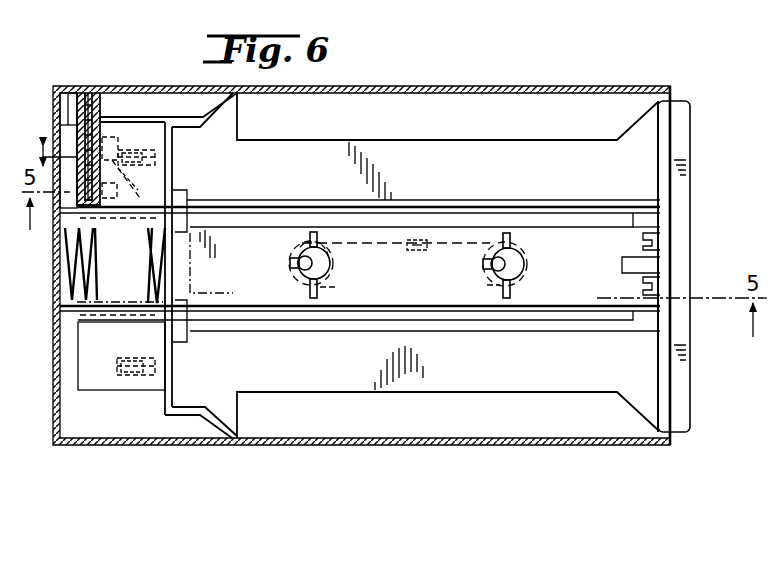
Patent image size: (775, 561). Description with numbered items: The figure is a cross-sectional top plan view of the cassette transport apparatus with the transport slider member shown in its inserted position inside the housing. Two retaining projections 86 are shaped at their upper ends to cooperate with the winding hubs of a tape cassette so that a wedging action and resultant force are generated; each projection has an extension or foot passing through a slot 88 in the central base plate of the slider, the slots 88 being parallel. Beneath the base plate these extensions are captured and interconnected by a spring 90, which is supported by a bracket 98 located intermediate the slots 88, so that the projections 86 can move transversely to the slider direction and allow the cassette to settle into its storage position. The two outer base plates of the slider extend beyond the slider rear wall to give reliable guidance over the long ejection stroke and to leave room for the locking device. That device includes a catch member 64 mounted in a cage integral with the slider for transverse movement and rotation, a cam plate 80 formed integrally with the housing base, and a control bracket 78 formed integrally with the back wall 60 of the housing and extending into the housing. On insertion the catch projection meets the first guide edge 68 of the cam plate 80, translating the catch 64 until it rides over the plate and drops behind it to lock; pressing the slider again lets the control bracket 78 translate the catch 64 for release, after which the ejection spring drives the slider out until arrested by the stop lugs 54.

The stop 54 is at (130, 150).
The back wall 60 is at (58, 382).
The catch member 64 is at (85, 147).
The first guide edge 68 is at (130, 177).
The control bracket 78 is at (68, 124).
The cam plate 80 is at (125, 192).
The retaining projections 86 is at (296, 276).
The slot 88 is at (308, 234).
The spring 90 is at (360, 249).
The bracket 98 is at (422, 252).